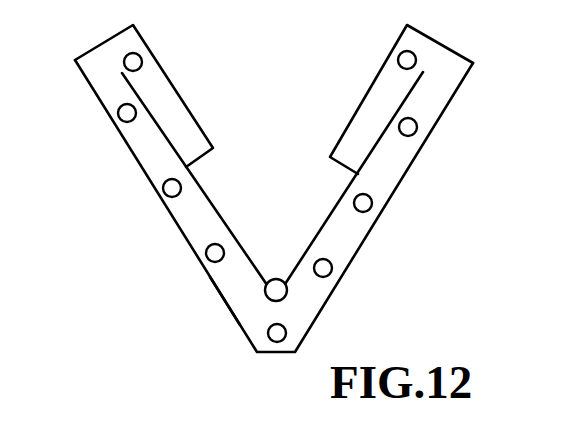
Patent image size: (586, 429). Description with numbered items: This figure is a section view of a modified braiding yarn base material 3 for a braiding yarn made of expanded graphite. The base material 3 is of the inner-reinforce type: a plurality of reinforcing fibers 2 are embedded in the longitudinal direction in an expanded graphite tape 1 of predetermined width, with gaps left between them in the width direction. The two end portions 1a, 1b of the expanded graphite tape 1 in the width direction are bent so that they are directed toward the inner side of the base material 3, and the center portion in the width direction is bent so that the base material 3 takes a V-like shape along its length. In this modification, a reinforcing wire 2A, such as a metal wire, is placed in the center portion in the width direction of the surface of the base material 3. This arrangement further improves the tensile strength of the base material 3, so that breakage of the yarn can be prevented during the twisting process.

The expanded graphite tape 1 is at (357, 243).
The end portion in the width direction 1a is at (354, 134).
The end portion in the width direction 1b is at (189, 125).
The reinforcing fibers 2 is at (130, 122).
The reinforcing wire 2A is at (277, 279).
The braiding yarn base material 3 is at (208, 287).